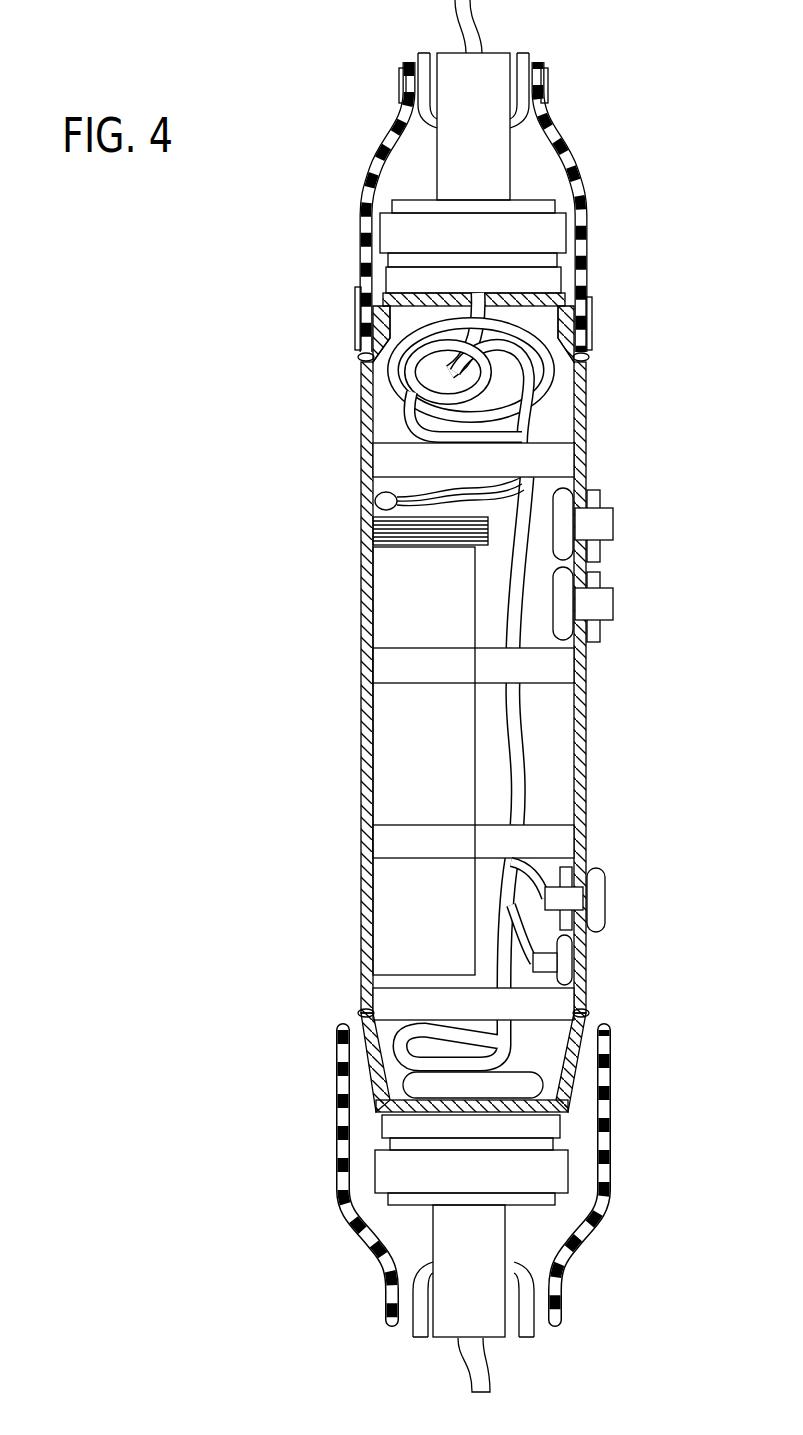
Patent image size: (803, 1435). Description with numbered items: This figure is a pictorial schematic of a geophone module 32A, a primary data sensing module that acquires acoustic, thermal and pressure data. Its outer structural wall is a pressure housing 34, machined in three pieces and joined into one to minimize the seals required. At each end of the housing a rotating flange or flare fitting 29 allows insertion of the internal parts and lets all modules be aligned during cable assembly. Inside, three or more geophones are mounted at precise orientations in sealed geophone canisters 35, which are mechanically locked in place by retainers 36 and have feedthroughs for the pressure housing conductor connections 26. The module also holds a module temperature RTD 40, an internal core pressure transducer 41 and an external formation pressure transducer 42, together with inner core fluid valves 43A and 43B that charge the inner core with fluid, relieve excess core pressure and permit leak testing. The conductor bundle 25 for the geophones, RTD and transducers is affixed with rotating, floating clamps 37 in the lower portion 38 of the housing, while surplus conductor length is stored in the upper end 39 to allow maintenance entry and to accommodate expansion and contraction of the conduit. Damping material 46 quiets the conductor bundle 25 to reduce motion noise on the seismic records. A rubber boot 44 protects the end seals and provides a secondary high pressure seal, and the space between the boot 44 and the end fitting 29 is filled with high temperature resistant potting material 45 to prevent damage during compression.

The conductor bundle 25 is at (522, 733).
The pressure housing conductor connections 26 is at (375, 540).
The flange or flare fitting 29 is at (557, 233).
The geophone module 32A is at (340, 281).
The pressure housing 34 is at (361, 427).
The geophone canister 35 is at (393, 600).
The retainer 36 is at (473, 753).
The rotating floating clamp 37 is at (473, 1085).
The lower portion of the pressure housing 38 is at (573, 1040).
The upper end of the pressure housing 39 is at (471, 383).
The module temperature RTD 40 is at (377, 503).
The internal core pressure transducer 41 is at (550, 945).
The external formation pressure transducer 42 is at (608, 898).
The inner core fluid valve 43A is at (613, 525).
The inner core fluid valve 43B is at (613, 605).
The rubber boot 44 is at (572, 160).
The potting material 45 is at (467, 126).
The damping material 46 is at (473, 731).